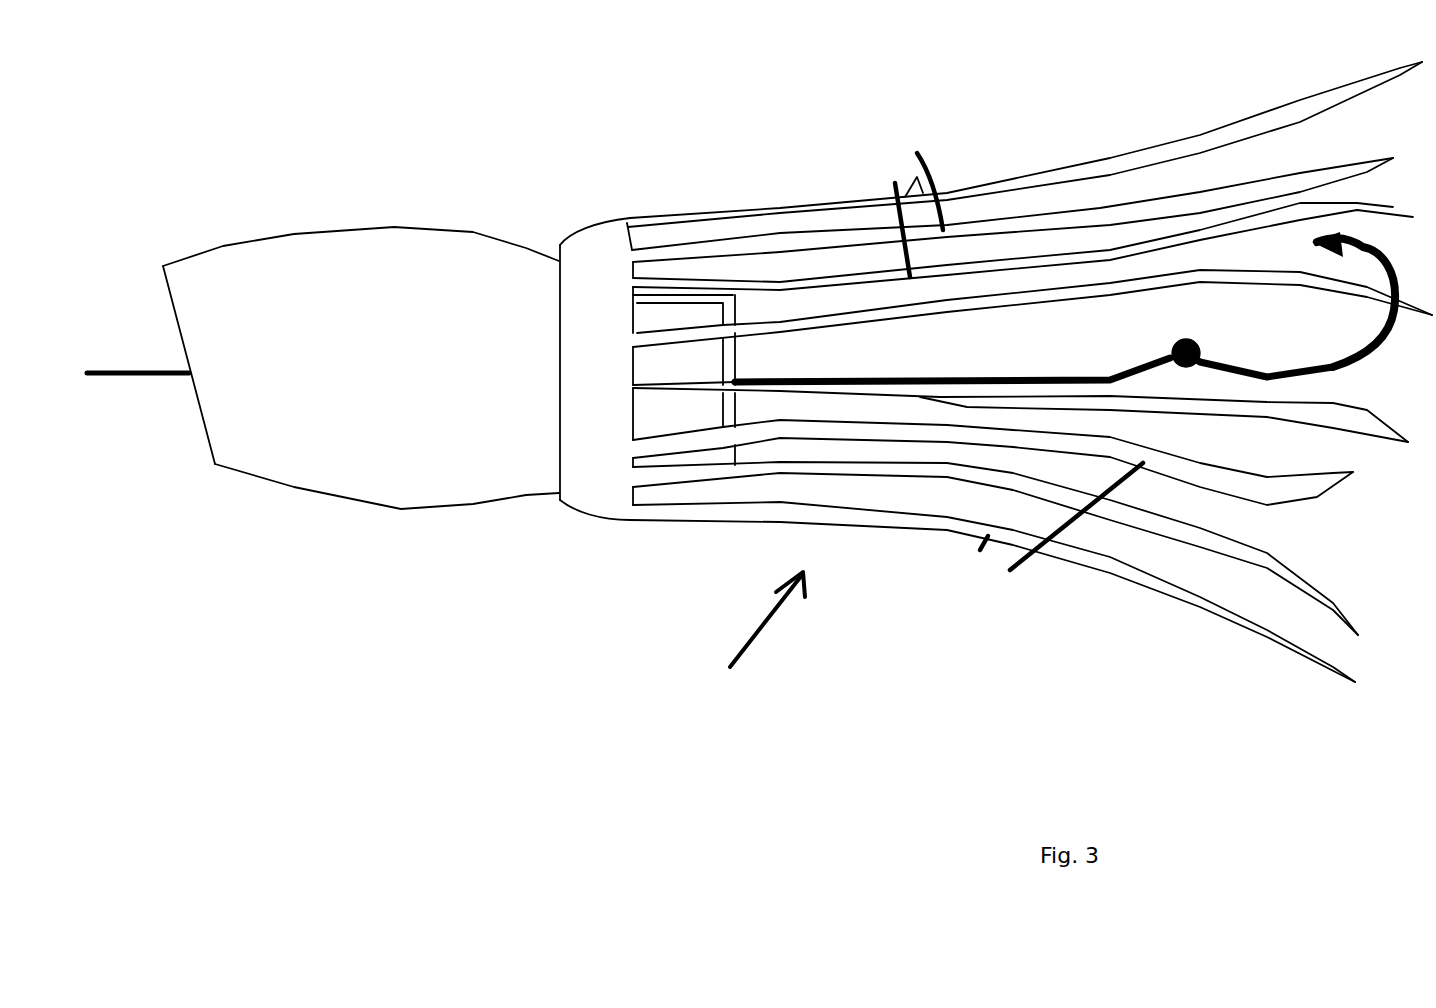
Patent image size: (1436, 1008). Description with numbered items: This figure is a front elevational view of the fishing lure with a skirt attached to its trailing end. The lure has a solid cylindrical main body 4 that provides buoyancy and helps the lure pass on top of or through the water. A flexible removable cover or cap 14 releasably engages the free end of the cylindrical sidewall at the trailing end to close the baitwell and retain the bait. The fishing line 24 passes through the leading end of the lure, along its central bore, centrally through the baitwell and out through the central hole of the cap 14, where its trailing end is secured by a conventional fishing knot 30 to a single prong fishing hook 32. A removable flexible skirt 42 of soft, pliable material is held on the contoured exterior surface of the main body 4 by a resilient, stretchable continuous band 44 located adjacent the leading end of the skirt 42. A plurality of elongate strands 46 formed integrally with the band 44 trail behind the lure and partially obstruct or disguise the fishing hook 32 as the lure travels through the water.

The main body 4 is at (384, 511).
The fishing line 24 is at (146, 379).
The continuous band 44 is at (603, 237).
The removable cover or cap 14 is at (705, 300).
The elongate strands 46 is at (895, 183).
The fishing knot 30 is at (1172, 340).
The fishing hook 32 is at (1327, 377).
The flexible skirt 42 is at (755, 633).